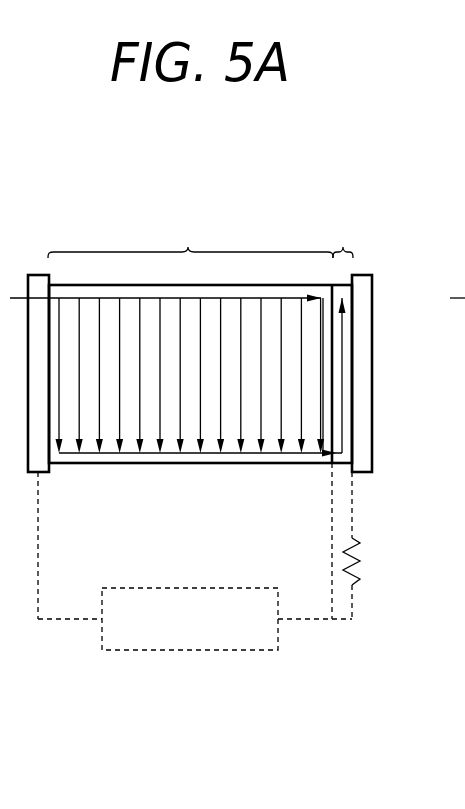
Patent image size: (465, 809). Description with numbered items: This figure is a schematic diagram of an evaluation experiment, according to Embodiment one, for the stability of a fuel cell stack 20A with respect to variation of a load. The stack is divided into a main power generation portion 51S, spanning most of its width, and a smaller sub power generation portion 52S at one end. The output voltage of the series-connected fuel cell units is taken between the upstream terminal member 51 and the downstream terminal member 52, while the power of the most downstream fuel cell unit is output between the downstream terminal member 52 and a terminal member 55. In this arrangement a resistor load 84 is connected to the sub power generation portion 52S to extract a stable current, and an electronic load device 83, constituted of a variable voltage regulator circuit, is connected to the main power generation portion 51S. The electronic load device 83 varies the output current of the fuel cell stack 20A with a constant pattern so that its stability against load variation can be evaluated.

The fuel cell stack 20A is at (250, 214).
The upstream terminal member 51 is at (38, 507).
The downstream terminal member 52 is at (332, 484).
The terminal member 55 is at (352, 500).
The resistor load 84 is at (360, 556).
The electronic load device 83 is at (240, 650).
The main power generation portion 51S is at (190, 238).
The sub power generation portion 52S is at (342, 238).